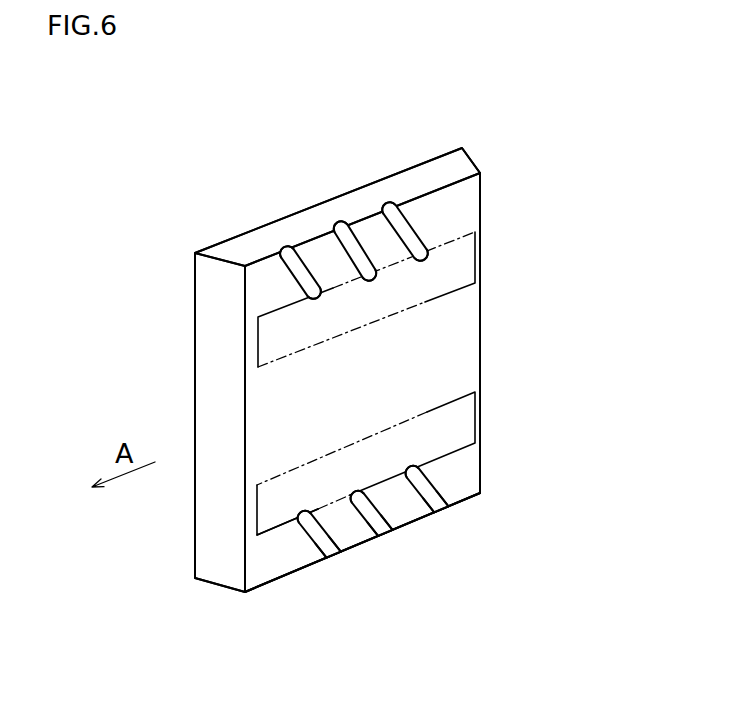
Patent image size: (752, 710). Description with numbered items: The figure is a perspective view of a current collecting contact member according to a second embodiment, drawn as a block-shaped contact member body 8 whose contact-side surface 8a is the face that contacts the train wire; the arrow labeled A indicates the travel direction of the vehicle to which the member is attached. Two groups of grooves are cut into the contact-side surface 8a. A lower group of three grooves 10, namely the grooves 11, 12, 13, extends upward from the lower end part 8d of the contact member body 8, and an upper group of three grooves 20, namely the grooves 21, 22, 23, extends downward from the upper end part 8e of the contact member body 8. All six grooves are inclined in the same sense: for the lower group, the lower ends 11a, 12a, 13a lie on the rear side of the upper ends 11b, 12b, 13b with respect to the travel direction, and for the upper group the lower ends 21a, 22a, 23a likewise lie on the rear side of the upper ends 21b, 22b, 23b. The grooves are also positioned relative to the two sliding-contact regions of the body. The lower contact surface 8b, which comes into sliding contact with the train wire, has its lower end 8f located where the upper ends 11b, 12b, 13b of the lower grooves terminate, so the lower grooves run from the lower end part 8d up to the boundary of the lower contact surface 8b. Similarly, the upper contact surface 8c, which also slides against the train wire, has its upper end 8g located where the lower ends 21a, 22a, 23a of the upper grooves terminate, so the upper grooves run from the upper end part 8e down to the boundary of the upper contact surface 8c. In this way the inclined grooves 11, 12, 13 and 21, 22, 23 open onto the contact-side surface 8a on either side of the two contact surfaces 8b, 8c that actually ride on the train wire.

The contact member body 8 is at (200, 250).
The contact-side surface 8a is at (473, 360).
The lower contact surface 8b is at (476, 418).
The upper contact surface 8c is at (477, 268).
The lower end part 8d is at (476, 495).
The upper end part 8e is at (470, 162).
The lower end of the lower contact surface 8f is at (268, 536).
The upper end of the upper contact surface 8g is at (472, 233).
The grooves 10 is at (438, 615).
The groove 11 is at (432, 499).
The lower end 11a is at (446, 510).
The upper end 11b is at (410, 466).
The groove 12 is at (362, 530).
The lower end 12a is at (387, 531).
The upper end 12b is at (353, 488).
The groove 13 is at (315, 547).
The lower end 13a is at (335, 551).
The upper end 13b is at (298, 512).
The grooves 20 is at (381, 58).
The groove 21 is at (292, 248).
The lower end 21a is at (320, 305).
The upper end 21b is at (276, 247).
The groove 22 is at (349, 237).
The lower end 22a is at (366, 290).
The upper end 22b is at (333, 228).
The groove 23 is at (395, 217).
The lower end 23a is at (423, 268).
The upper end 23b is at (393, 203).